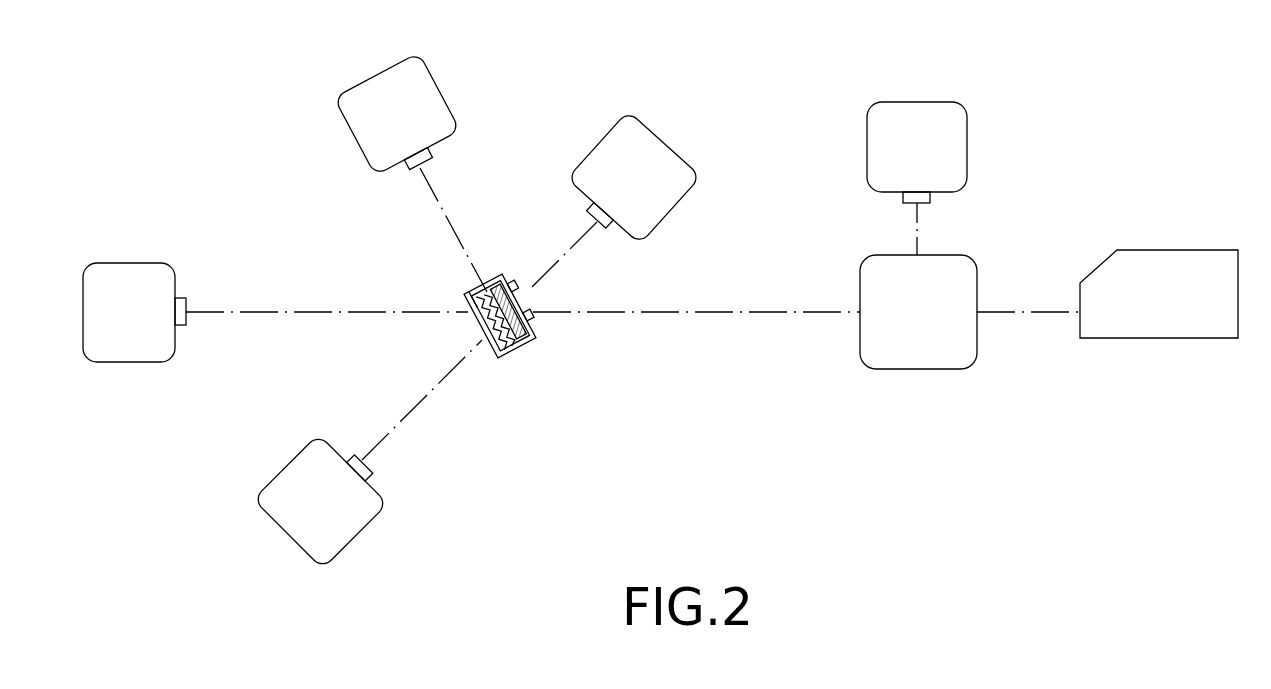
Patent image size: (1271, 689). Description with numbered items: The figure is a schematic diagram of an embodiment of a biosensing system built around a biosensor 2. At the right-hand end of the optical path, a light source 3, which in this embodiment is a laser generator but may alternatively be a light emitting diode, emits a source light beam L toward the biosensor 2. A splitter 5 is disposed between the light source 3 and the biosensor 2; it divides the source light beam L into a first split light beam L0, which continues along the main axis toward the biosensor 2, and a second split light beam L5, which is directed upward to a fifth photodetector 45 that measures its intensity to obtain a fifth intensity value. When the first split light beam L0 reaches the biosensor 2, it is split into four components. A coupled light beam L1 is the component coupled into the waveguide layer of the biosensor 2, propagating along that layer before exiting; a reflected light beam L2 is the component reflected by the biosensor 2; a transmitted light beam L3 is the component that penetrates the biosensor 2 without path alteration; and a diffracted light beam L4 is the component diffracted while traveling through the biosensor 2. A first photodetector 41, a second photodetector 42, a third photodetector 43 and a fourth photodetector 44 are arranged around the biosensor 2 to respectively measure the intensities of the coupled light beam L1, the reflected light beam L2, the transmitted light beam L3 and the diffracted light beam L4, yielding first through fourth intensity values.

The biosensor 2 is at (548, 386).
The light source 3 is at (1178, 267).
The splitter 5 is at (918, 358).
The first photodetector 41 is at (378, 82).
The second photodetector 42 is at (650, 152).
The third photodetector 43 is at (127, 342).
The fourth photodetector 44 is at (357, 537).
The fifth photodetector 45 is at (913, 115).
The source light beam L is at (1030, 313).
The first split light beam L0 is at (742, 312).
The coupled light beam L1 is at (440, 220).
The reflected light beam L2 is at (545, 262).
The transmitted light beam L3 is at (302, 315).
The diffracted light beam L4 is at (445, 372).
The second split light beam L5 is at (917, 217).